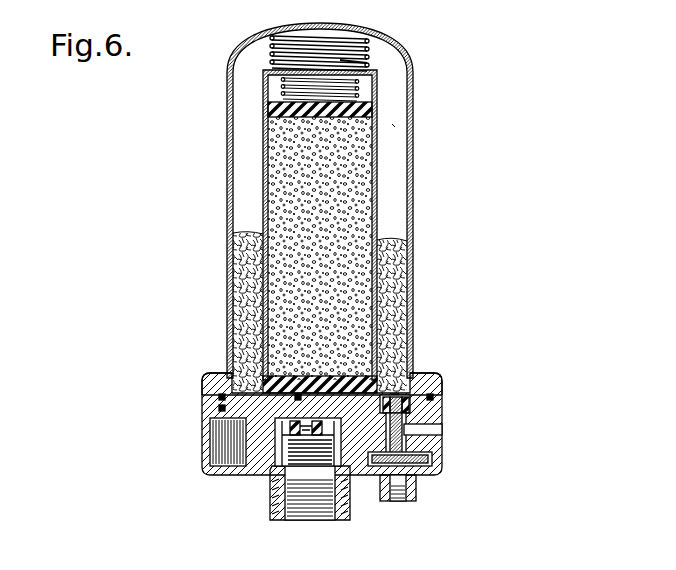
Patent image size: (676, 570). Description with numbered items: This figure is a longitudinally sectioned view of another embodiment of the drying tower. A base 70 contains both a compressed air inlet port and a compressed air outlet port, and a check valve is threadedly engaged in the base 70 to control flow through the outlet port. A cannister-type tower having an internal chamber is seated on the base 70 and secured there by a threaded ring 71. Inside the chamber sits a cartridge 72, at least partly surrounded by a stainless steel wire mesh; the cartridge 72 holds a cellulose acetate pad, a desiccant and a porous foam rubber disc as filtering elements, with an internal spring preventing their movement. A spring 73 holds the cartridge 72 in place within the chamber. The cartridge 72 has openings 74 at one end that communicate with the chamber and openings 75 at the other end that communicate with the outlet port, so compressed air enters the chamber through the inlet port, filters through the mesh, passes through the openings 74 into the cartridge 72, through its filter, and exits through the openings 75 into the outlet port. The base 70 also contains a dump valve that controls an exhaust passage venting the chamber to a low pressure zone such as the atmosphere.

The spring 73 is at (346, 44).
The openings 74 is at (348, 62).
The cartridge 72 is at (378, 162).
The openings 75 is at (223, 397).
The base 70 is at (257, 477).
The threaded ring 71 is at (440, 378).